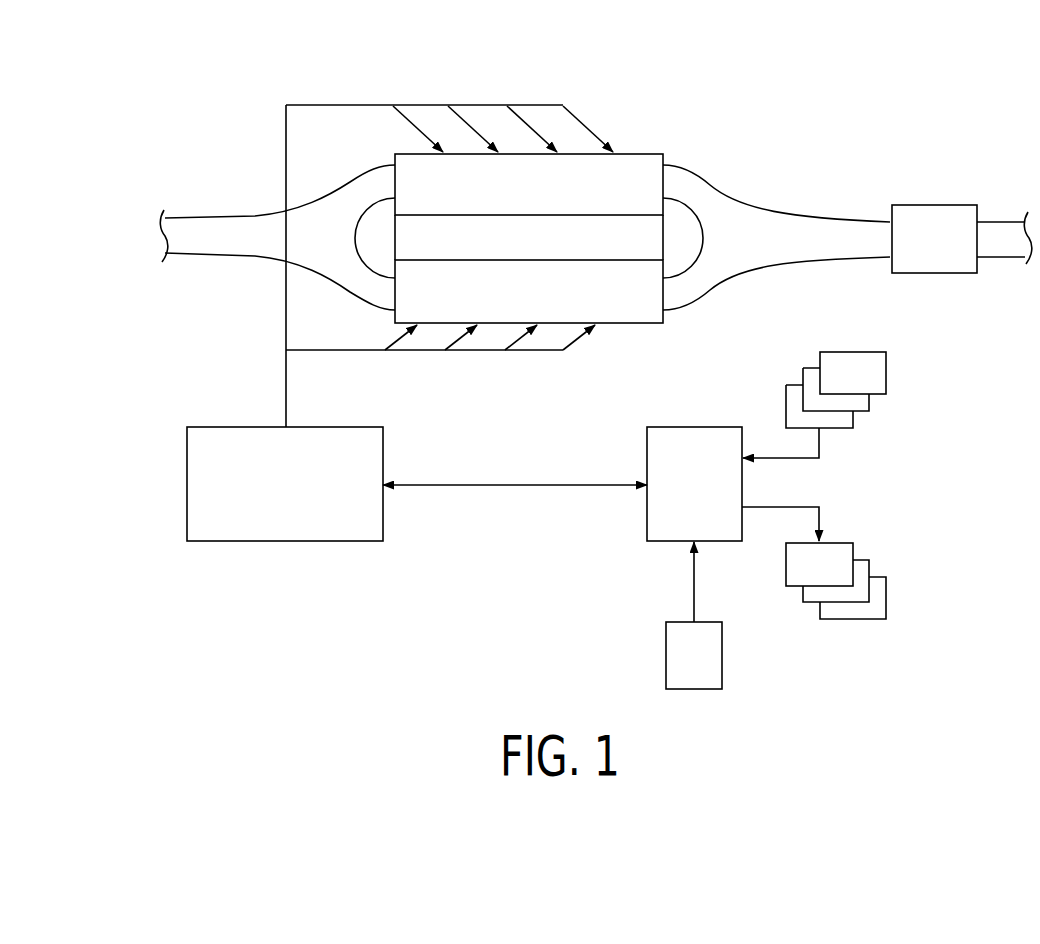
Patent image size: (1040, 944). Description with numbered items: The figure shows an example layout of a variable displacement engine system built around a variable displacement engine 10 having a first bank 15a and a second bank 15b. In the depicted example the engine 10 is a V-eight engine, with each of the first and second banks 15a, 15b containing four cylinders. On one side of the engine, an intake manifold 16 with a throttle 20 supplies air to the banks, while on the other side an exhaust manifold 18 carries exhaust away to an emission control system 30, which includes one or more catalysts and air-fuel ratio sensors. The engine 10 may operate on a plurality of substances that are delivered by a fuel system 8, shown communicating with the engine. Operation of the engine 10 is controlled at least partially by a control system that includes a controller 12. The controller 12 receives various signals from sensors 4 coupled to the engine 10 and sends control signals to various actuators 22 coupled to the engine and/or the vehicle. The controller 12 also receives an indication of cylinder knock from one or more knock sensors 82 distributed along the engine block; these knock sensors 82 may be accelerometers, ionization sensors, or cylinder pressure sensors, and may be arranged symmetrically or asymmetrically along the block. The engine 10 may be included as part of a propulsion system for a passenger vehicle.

The variable displacement engine 10 is at (666, 124).
The first bank 15a is at (529, 184).
The second bank 15b is at (529, 291).
The intake manifold 16 is at (268, 212).
The exhaust manifold 18 is at (728, 208).
The throttle 20 is at (240, 236).
The emission control system 30 is at (935, 205).
The fuel system 8 is at (284, 541).
The controller 12 is at (669, 543).
The sensors 4 is at (886, 370).
The actuators 22 is at (886, 597).
The knock sensors 82 is at (722, 660).